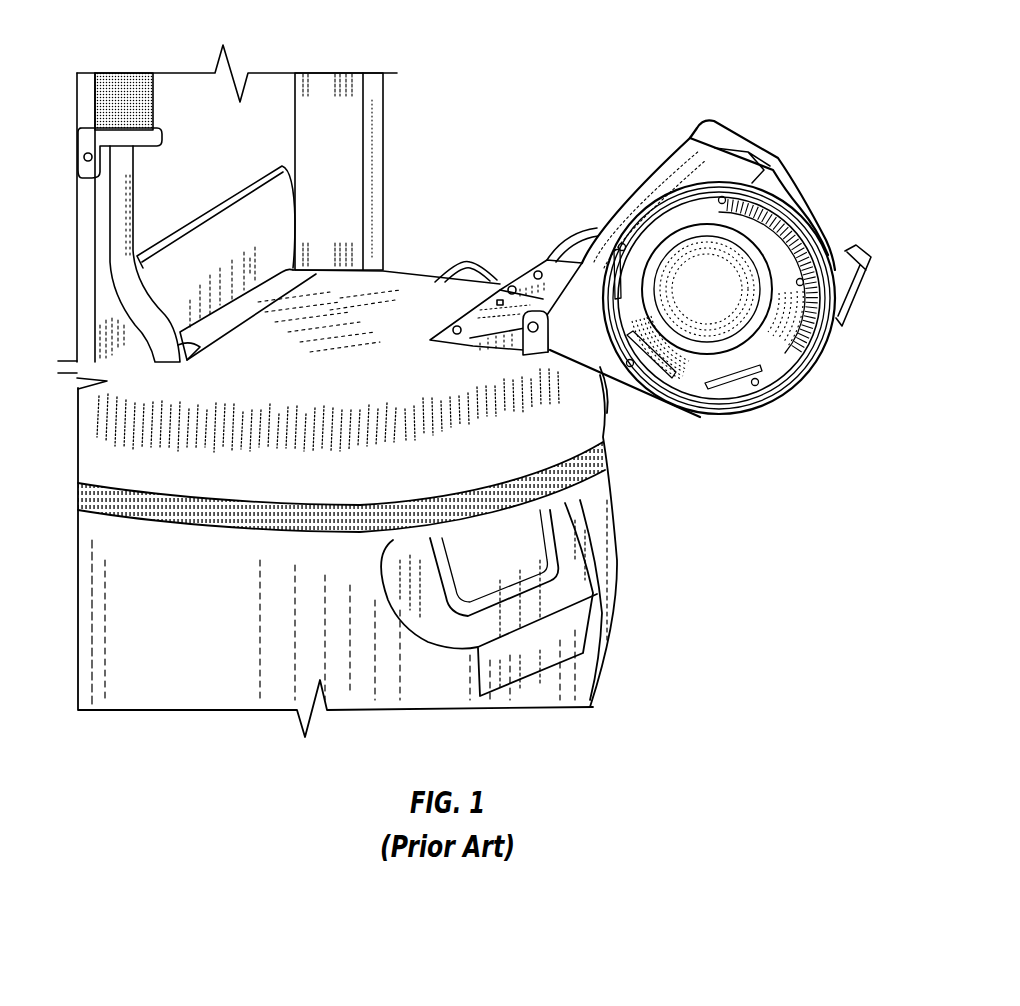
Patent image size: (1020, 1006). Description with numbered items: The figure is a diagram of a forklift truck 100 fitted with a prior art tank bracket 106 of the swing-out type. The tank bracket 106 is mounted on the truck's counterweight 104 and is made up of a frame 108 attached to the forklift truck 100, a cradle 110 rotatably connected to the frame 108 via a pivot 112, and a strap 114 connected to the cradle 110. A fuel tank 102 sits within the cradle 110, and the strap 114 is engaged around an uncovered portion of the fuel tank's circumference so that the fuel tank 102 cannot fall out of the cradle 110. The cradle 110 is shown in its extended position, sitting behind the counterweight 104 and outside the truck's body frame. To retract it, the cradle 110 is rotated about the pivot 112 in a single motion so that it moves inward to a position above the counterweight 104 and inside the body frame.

The forklift truck 100 is at (740, 215).
The fuel tank 102 is at (833, 220).
The counterweight 104 is at (613, 512).
The tank bracket 106 is at (853, 331).
The frame 108 is at (492, 321).
The cradle 110 is at (674, 156).
The pivot 112 is at (523, 353).
The strap 114 is at (780, 175).